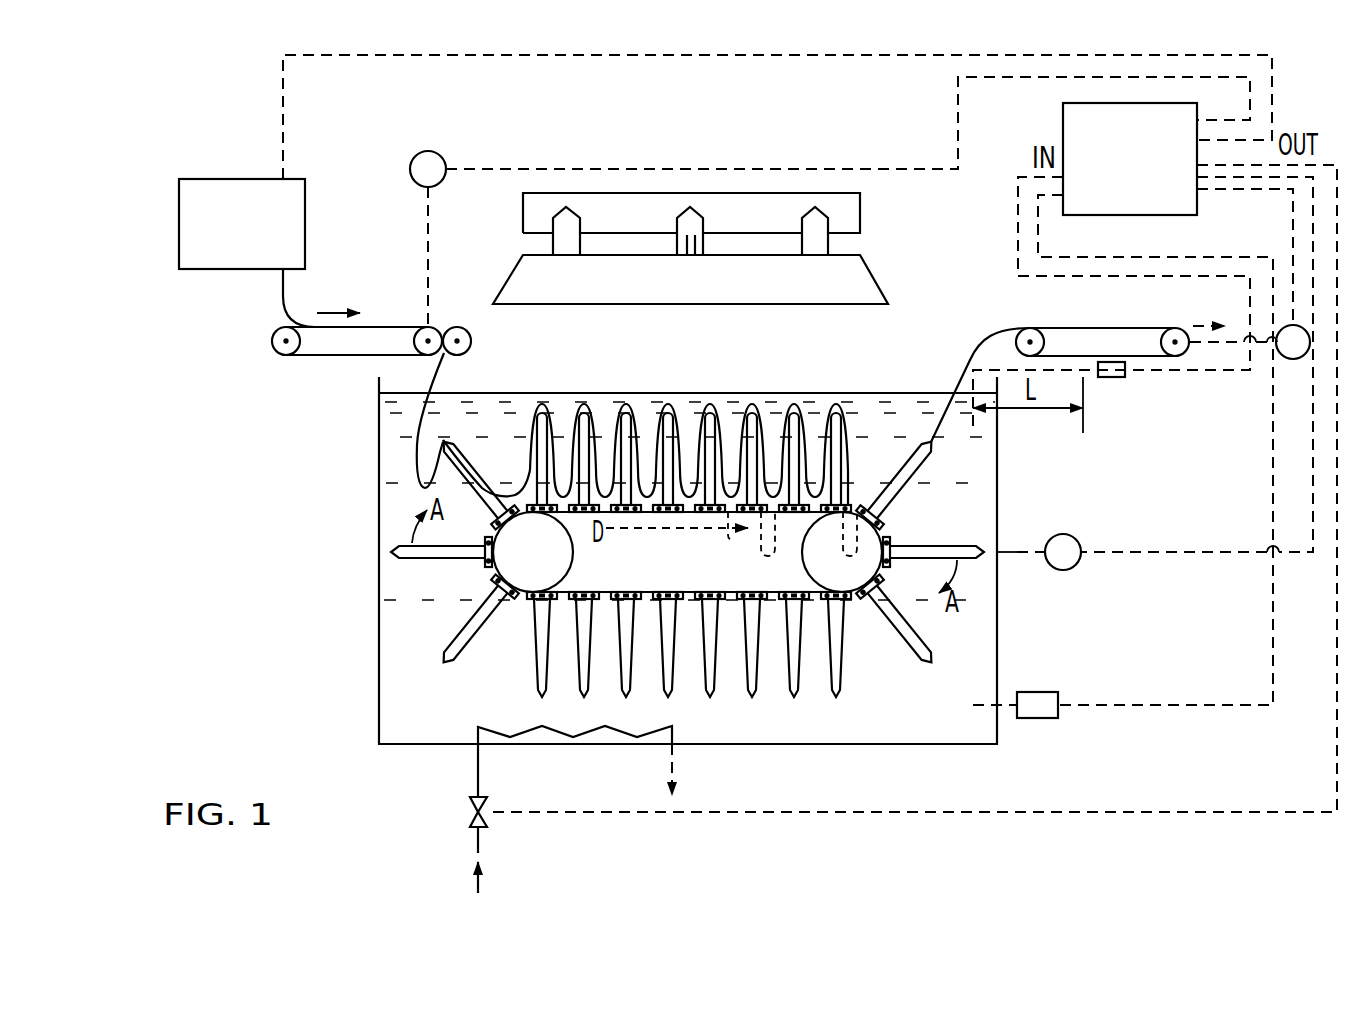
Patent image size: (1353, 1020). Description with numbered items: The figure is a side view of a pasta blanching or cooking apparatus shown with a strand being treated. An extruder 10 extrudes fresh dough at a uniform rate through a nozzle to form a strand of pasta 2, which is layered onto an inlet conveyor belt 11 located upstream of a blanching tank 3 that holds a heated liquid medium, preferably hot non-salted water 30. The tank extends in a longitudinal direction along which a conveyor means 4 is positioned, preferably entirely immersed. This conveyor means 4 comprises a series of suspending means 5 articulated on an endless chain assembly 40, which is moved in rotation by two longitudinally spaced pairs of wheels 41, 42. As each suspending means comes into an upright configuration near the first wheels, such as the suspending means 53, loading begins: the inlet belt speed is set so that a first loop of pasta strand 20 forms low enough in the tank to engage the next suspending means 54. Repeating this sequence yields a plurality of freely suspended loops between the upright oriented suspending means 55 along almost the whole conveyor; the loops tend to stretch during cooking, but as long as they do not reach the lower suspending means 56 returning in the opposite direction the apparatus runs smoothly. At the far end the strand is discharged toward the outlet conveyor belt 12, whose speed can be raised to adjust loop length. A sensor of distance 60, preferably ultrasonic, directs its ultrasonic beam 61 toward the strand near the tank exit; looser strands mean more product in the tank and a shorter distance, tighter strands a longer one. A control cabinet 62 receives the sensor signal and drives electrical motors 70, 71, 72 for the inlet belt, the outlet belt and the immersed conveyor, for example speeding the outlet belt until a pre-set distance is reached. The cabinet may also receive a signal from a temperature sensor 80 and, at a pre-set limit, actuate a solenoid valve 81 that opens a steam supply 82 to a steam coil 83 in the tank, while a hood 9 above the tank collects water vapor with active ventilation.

The strand of pasta 2 is at (292, 303).
The blanching tank 3 is at (377, 662).
The conveyor means 4 is at (457, 690).
The suspending means 5 is at (400, 543).
The hood 9 is at (877, 277).
The extruder 10 is at (200, 277).
The inlet conveyor belt 11 is at (302, 360).
The outlet conveyor belt 12 is at (1062, 362).
The first loop of pasta strand 20 is at (413, 458).
The hot non-salted water 30 is at (407, 708).
The endless chain assembly 40 is at (480, 573).
The first pair of wheels 41 is at (527, 577).
The second pair of wheels 42 is at (847, 578).
The suspending means 53 is at (477, 467).
The next suspending means 54 is at (397, 561).
The upright oriented suspending means 55 is at (710, 405).
The lower suspending means 56 is at (710, 697).
The sensor of distance 60 is at (1132, 373).
The ultrasonic beam 61 is at (1002, 368).
The control cabinet 62 is at (1058, 120).
The motor of inlet conveyor belt 70 is at (412, 167).
The motor of outlet conveyor belt 71 is at (1293, 360).
The motor of immersed conveyor 72 is at (1070, 534).
The temperature sensor 80 is at (1042, 692).
The solenoid valve 81 is at (468, 812).
The steam supply 82 is at (478, 885).
The steam coil 83 is at (593, 733).